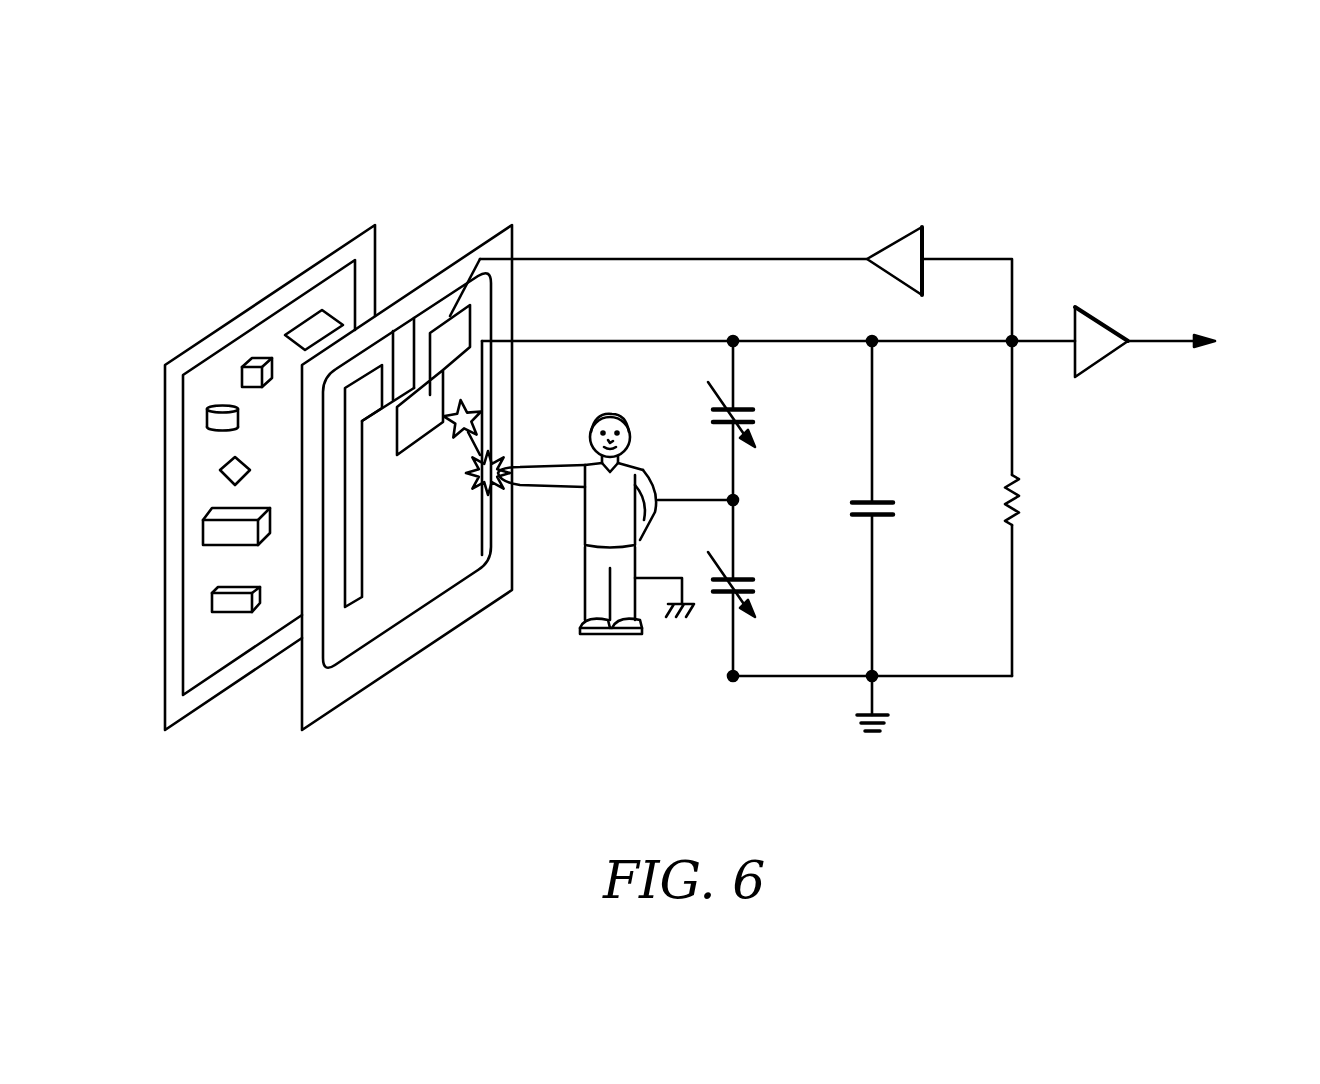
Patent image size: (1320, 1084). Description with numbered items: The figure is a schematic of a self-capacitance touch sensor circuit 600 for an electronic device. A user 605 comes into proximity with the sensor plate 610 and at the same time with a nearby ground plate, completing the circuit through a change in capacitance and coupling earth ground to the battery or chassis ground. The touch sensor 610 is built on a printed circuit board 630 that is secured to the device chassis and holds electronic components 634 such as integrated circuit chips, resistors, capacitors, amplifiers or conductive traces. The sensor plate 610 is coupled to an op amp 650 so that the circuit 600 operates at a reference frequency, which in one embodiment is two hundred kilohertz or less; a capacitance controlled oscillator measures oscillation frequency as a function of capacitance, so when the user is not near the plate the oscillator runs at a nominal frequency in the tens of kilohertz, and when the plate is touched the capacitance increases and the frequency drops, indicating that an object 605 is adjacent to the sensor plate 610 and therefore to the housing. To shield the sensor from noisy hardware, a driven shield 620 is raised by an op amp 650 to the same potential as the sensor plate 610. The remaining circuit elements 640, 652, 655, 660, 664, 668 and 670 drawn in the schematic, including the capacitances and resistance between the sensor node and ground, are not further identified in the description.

The touch sensor circuit 600 is at (1304, 114).
The user 605 is at (614, 408).
The sensor plate 610 is at (323, 668).
The driven shield 620 is at (344, 578).
The printed circuit board 630 is at (280, 289).
The electronic components 634 is at (205, 412).
The ground 640 is at (680, 620).
The op amp 650 is at (895, 237).
The output amplifier 652 is at (1103, 318).
The resistor R 655 is at (1005, 493).
The sensor-to-ground capacitance Csg 660 is at (860, 498).
The sensor capacitance Cs 664 is at (722, 431).
The ground capacitance Cg 668 is at (740, 578).
The circuit ground 670 is at (883, 712).